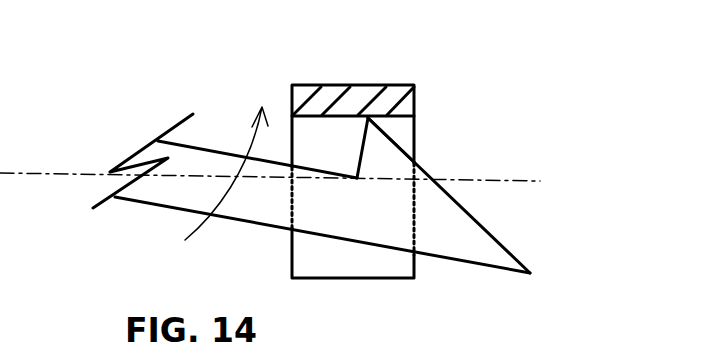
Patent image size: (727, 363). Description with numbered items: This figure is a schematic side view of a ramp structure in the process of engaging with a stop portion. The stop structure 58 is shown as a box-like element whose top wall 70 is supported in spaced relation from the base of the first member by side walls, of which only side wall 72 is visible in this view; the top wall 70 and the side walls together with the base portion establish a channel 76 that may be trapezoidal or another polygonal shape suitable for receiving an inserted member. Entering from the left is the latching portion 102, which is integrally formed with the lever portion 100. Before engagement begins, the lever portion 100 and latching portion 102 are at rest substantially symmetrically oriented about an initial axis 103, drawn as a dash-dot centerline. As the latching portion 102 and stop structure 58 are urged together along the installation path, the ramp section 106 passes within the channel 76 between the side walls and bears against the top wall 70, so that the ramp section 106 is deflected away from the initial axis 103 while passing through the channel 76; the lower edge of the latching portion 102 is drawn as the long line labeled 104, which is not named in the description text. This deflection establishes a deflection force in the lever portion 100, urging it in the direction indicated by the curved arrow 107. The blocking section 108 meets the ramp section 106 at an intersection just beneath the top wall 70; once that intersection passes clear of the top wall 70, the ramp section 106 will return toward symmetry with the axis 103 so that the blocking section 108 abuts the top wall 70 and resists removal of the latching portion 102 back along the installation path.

The stop structure 58 is at (367, 163).
The top wall 70 is at (373, 85).
The side wall 72 is at (290, 258).
The channel 76 is at (411, 131).
The lever portion 100 is at (206, 148).
The latching portion 102 is at (463, 151).
The initial axis 103 is at (536, 181).
The lower ray boundary 104 is at (450, 262).
The ramp section 106 is at (479, 215).
The arrow 107 is at (236, 160).
The blocking section 108 is at (361, 150).